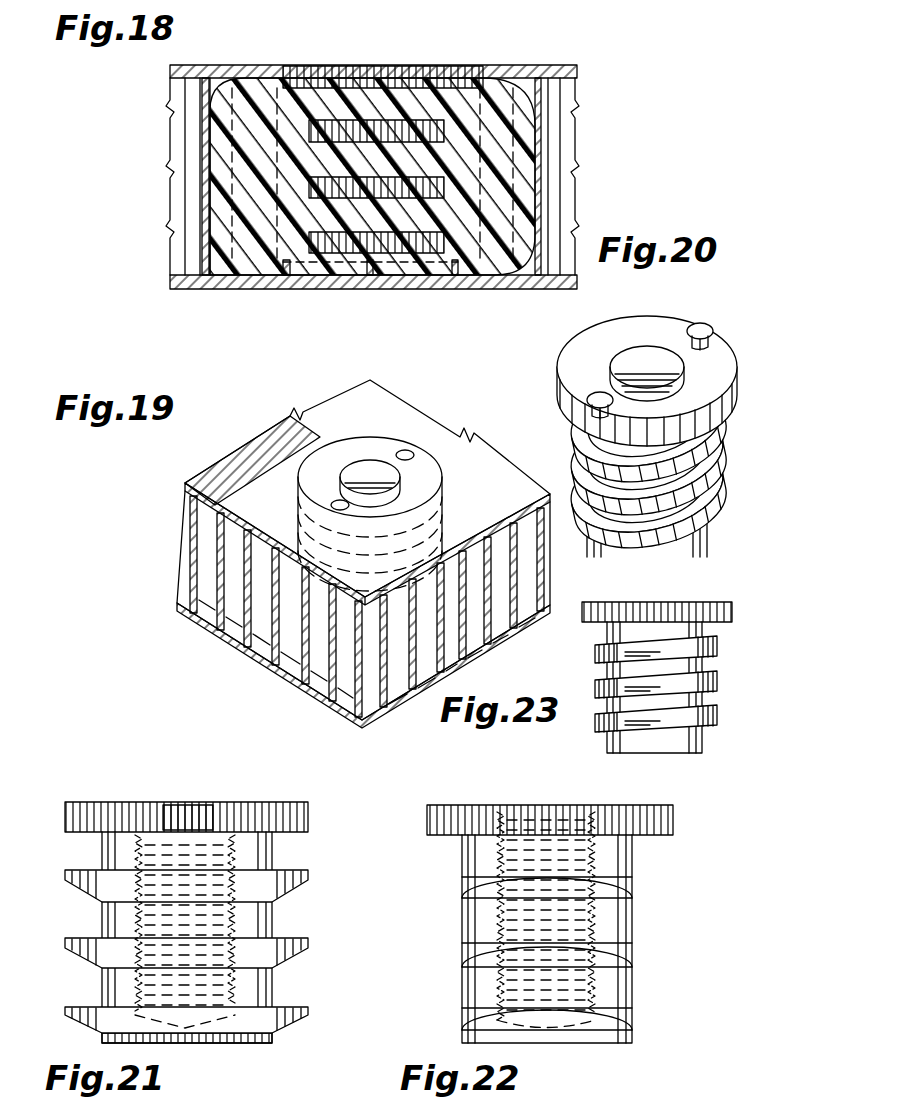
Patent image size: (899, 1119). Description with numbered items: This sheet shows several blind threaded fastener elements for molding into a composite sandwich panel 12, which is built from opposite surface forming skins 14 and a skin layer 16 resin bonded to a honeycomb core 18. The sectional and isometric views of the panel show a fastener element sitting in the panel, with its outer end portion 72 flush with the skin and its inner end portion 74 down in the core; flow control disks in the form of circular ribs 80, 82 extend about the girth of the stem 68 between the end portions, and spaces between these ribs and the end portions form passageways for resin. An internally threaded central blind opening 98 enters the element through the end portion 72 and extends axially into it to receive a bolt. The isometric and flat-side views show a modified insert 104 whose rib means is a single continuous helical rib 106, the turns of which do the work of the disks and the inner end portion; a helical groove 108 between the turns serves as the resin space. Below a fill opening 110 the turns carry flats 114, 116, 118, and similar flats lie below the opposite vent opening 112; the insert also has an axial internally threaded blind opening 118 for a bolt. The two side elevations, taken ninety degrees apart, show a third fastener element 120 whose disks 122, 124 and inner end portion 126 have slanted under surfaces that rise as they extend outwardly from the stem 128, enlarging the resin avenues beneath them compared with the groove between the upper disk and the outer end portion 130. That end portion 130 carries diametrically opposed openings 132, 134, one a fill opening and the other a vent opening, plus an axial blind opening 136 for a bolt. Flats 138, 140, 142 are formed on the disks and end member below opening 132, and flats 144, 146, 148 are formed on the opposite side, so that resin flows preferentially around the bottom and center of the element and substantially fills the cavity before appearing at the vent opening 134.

In FIG. 18, the sandwich panel 12 is at (198, 291).
In FIG. 19, the sandwich panel 12 is at (263, 683).
In FIG. 18, the surface forming skins 14 is at (533, 66).
In FIG. 19, the surface forming skins 14 is at (422, 420).
In FIG. 18, the skin layer 16 is at (250, 284).
In FIG. 19, the skin layer 16 is at (212, 632).
In FIG. 18, the honeycomb core 18 is at (192, 210).
In FIG. 19, the honeycomb core 18 is at (210, 538).
In FIG. 18, the stem 68 is at (247, 133).
In FIG. 18, the end portion 72 is at (290, 68).
In FIG. 19, the end portion 72 is at (317, 467).
In FIG. 18, the inner end portion 74 is at (352, 242).
In FIG. 18, the circular rib 80 is at (358, 126).
In FIG. 18, the circular rib 82 is at (420, 172).
In FIG. 19, the central blind opening 98 is at (375, 467).
In FIG. 20, the insert 104 is at (633, 432).
In FIG. 20, the helical rib 106 is at (658, 479).
In FIG. 23, the helical rib 106 is at (720, 720).
In FIG. 20, the helical groove 108 is at (653, 483).
In FIG. 23, the helical groove 108 is at (675, 665).
In FIG. 20, the fill opening 110 is at (603, 387).
In FIG. 23, the fill opening 110 is at (660, 602).
In FIG. 20, the vent opening 112 is at (712, 340).
In FIG. 20, the flat 114 is at (580, 445).
In FIG. 23, the flat 114 is at (612, 644).
In FIG. 20, the flat 116 is at (585, 480).
In FIG. 23, the flat 116 is at (605, 673).
In FIG. 20, the flat 118 is at (658, 353).
In FIG. 23, the flat 118 is at (625, 752).
In FIG. 21, the fastener element 120 is at (214, 887).
In FIG. 22, the fastener element 120 is at (560, 897).
In FIG. 21, the disk 122 is at (327, 863).
In FIG. 21, the disk 124 is at (305, 945).
In FIG. 21, the end portion 126 is at (333, 1012).
In FIG. 21, the stem 128 is at (250, 987).
In FIG. 21, the end portion 130 is at (280, 804).
In FIG. 21, the opening 132 is at (183, 807).
In FIG. 22, the opening 132 is at (431, 778).
In FIG. 22, the opening 134 is at (660, 835).
In FIG. 21, the blind opening 136 is at (157, 800).
In FIG. 22, the blind opening 136 is at (537, 805).
In FIG. 22, the flat 138 is at (468, 882).
In FIG. 22, the flat 140 is at (470, 950).
In FIG. 22, the flat 142 is at (470, 1020).
In FIG. 22, the flat 144 is at (630, 883).
In FIG. 22, the flat 146 is at (630, 955).
In FIG. 22, the flat 148 is at (630, 1020).